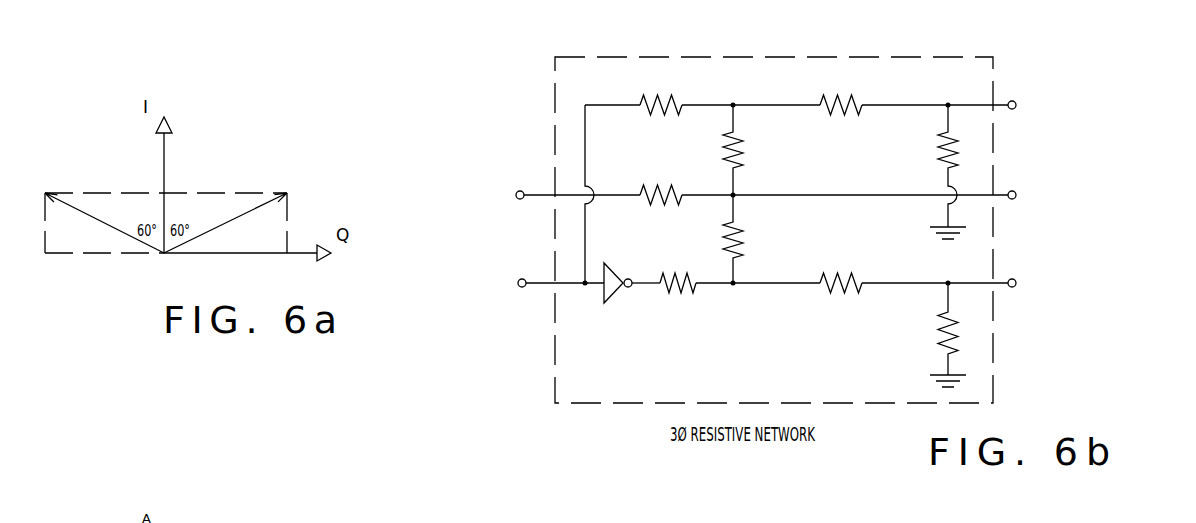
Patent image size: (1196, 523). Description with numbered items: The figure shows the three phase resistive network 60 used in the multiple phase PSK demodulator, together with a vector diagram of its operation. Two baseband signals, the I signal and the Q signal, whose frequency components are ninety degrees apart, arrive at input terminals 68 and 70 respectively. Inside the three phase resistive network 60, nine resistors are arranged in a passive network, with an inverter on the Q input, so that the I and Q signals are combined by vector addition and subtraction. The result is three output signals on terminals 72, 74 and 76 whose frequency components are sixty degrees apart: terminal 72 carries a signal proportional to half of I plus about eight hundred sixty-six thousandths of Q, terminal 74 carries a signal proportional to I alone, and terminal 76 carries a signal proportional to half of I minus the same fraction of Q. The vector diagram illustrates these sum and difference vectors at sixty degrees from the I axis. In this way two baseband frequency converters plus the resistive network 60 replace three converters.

The three phase resistive network 60 is at (722, 352).
The terminal 68 is at (538, 172).
The terminal 70 is at (525, 287).
The output terminal 72 is at (1010, 101).
The output terminal 74 is at (1014, 176).
The output terminal 76 is at (1010, 279).